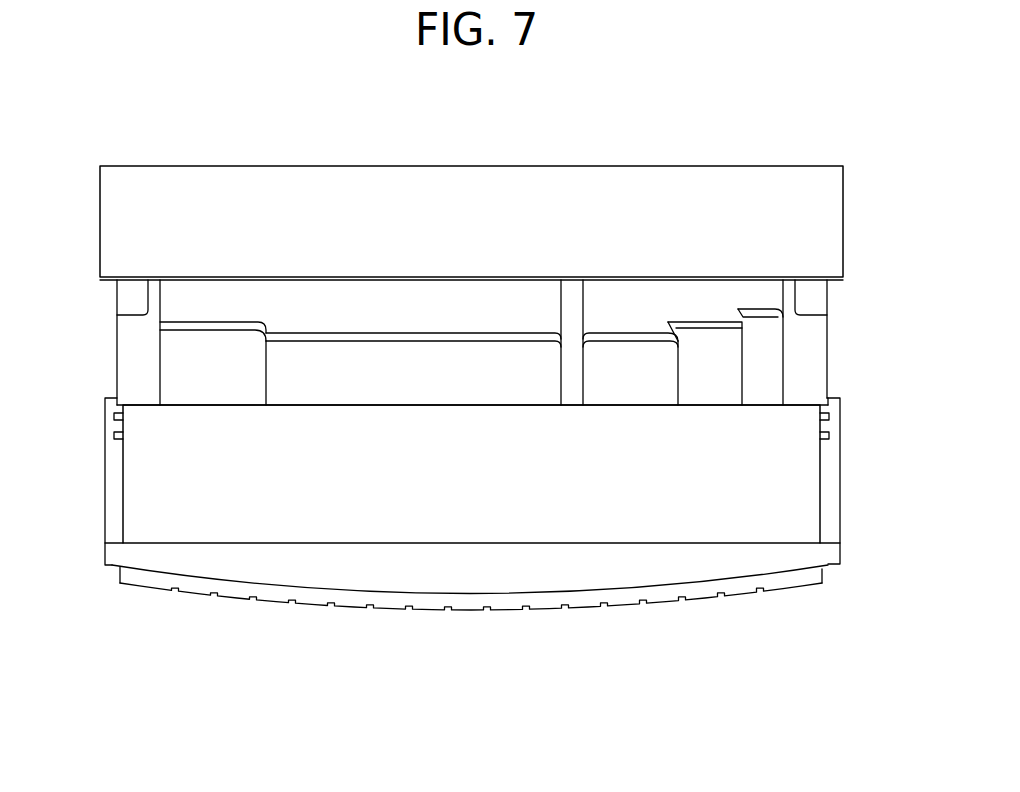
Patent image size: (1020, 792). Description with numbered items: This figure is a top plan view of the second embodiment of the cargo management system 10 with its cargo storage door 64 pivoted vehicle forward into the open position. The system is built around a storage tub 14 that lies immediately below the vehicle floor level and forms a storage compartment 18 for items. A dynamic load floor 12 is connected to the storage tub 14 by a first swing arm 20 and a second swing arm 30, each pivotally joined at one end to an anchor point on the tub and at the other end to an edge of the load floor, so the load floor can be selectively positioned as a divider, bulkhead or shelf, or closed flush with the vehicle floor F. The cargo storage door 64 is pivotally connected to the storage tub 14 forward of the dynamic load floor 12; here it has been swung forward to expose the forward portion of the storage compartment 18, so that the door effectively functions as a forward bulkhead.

The cargo management system 10 is at (728, 113).
The dynamic load floor 12 is at (477, 490).
The storage tub 14 is at (117, 345).
The storage compartment 18 is at (652, 378).
The first swing arm 20 is at (113, 480).
The second swing arm 30 is at (828, 487).
The cargo storage door 64 is at (600, 213).
The floor F is at (468, 575).